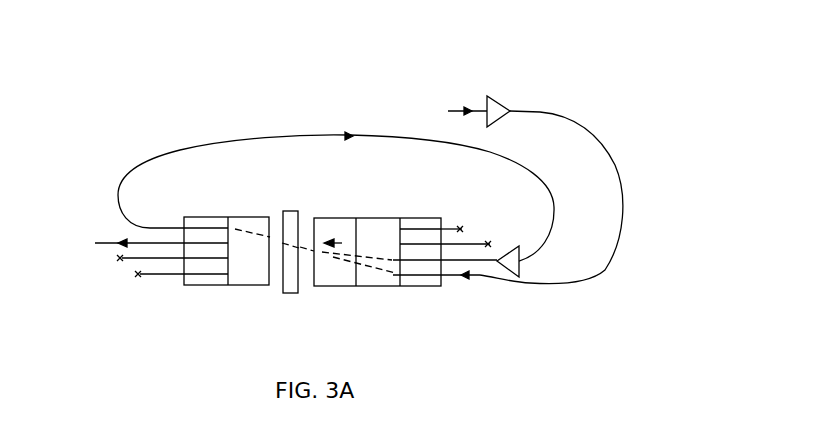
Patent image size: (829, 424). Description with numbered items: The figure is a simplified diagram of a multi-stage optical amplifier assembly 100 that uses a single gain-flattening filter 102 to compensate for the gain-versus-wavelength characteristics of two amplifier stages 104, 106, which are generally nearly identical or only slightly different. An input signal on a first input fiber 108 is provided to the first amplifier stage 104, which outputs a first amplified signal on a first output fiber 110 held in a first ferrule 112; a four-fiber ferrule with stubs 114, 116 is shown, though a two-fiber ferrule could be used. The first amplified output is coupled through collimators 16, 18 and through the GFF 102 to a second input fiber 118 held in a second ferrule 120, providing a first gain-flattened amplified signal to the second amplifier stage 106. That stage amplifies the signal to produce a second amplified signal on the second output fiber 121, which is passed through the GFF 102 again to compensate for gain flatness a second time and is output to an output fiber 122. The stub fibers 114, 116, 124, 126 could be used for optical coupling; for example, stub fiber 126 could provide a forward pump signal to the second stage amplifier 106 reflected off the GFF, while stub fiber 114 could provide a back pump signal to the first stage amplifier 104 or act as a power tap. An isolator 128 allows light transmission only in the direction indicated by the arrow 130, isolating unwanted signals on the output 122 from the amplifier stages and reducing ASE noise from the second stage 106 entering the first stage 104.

The multi-stage optical amplifier assembly 100 is at (588, 93).
The gain-flattening filter 102 is at (290, 211).
The first amplifier stage 104 is at (498, 100).
The second amplifier stage 106 is at (507, 248).
The first input fiber 108 is at (478, 107).
The first output fiber 110 is at (610, 147).
The first ferrule 112 is at (423, 286).
The stub fiber 114 is at (422, 228).
The stub fiber 116 is at (470, 242).
The second input fiber 118 is at (118, 187).
The second ferrule 120 is at (207, 217).
The second output fiber 121 is at (478, 262).
The output fiber 122 is at (112, 241).
The stub fiber 124 is at (125, 262).
The stub fiber 126 is at (157, 277).
The isolator 128 is at (332, 286).
The arrow 130 is at (337, 242).
The collimator 16 is at (252, 217).
The collimator 18 is at (377, 286).